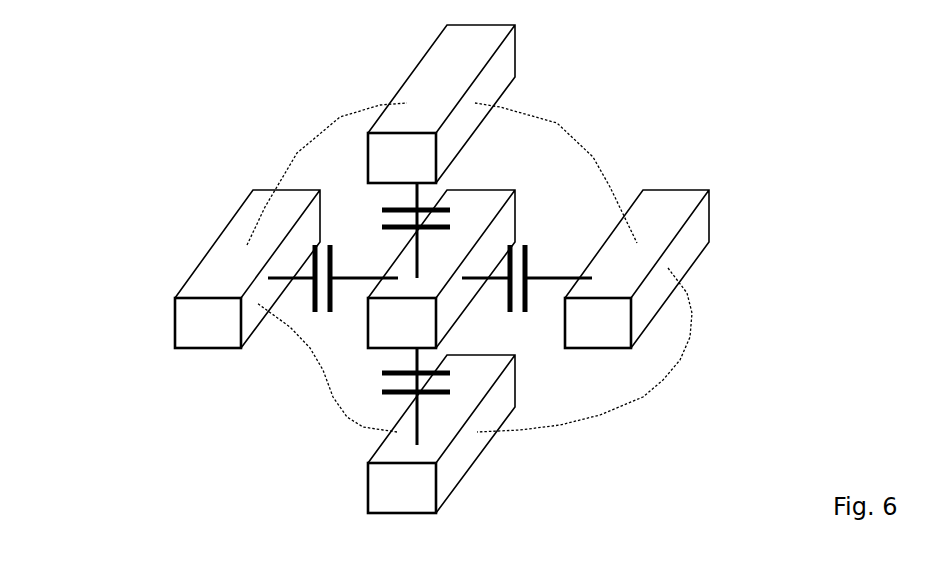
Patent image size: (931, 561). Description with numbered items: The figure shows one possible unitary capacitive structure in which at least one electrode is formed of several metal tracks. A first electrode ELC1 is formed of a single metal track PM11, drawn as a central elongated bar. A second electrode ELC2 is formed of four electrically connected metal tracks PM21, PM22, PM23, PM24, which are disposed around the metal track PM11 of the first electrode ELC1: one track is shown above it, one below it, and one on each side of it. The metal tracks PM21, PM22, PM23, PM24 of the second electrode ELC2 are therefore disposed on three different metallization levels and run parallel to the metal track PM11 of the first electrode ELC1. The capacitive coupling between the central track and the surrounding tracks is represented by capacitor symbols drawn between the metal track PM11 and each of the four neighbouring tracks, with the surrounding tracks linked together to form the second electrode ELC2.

The metal track PM24 is at (490, 85).
The metal track PM11 is at (353, 347).
The metal track PM22 is at (447, 478).
The metal track PM21 is at (205, 262).
The metal track PM23 is at (688, 252).
The first electrode ELC1 is at (507, 222).
The second electrode ELC2 is at (202, 327).